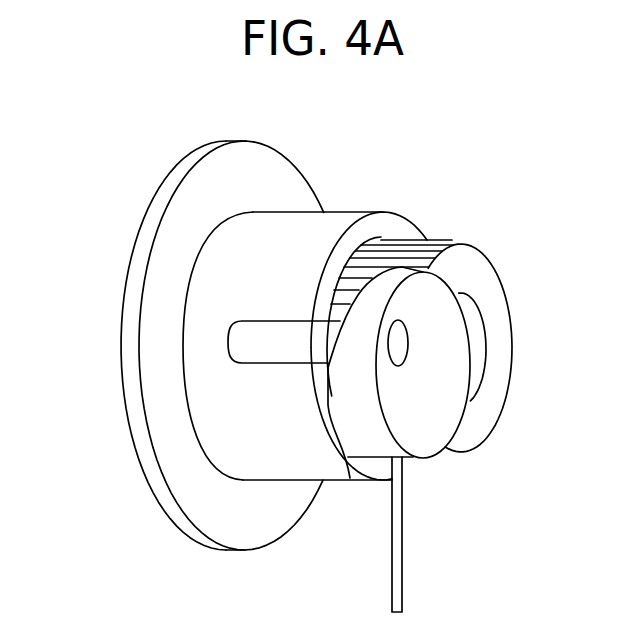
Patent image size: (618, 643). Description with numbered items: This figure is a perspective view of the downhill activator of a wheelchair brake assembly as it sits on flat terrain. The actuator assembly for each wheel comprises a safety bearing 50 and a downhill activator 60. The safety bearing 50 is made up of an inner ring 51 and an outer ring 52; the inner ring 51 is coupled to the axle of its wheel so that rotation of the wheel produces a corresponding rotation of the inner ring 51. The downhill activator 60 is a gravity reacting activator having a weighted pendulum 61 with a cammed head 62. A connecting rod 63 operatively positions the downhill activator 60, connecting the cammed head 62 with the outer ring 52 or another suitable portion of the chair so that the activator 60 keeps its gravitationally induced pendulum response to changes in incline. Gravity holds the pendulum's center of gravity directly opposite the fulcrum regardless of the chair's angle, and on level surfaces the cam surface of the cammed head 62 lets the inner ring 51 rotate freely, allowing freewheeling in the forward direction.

The safety bearing 50 is at (112, 485).
The inner ring 51 is at (489, 262).
The outer ring 52 is at (405, 222).
The downhill activator 60 is at (446, 382).
The weighted pendulum 61 is at (397, 547).
The cammed head 62 is at (348, 478).
The connecting rod 63 is at (312, 222).